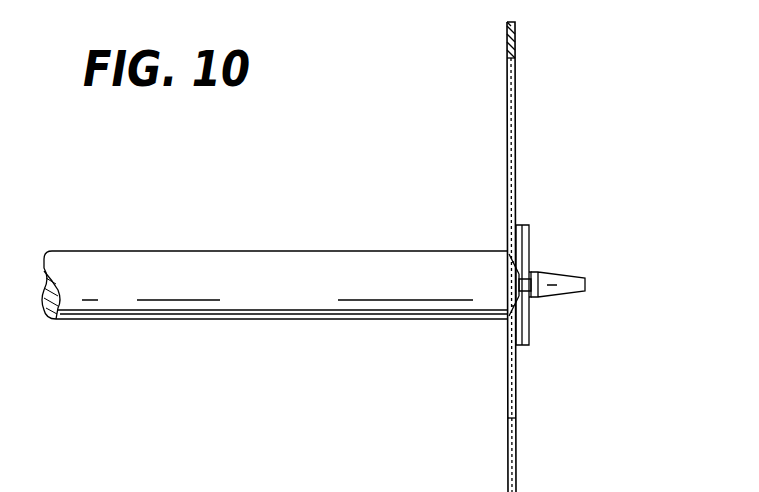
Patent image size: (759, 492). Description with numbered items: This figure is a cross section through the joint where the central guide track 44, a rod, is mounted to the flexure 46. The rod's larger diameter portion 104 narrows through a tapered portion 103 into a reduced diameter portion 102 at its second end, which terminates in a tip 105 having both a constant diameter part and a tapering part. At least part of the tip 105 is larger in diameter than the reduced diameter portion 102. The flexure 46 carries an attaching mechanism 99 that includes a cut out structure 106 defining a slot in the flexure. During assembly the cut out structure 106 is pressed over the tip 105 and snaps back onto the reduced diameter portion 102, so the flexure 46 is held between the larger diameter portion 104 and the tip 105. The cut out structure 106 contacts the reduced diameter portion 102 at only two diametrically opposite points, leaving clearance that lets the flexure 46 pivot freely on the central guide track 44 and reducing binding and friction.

The central guide track 44 is at (322, 256).
The flexure 46 is at (533, 42).
The attaching mechanism 99 is at (548, 240).
The reduced diameter portion 102 is at (537, 298).
The tapered portion 103 is at (511, 286).
The larger diameter portion 104 is at (257, 306).
The tip 105 is at (586, 279).
The cut out structure 106 is at (531, 272).